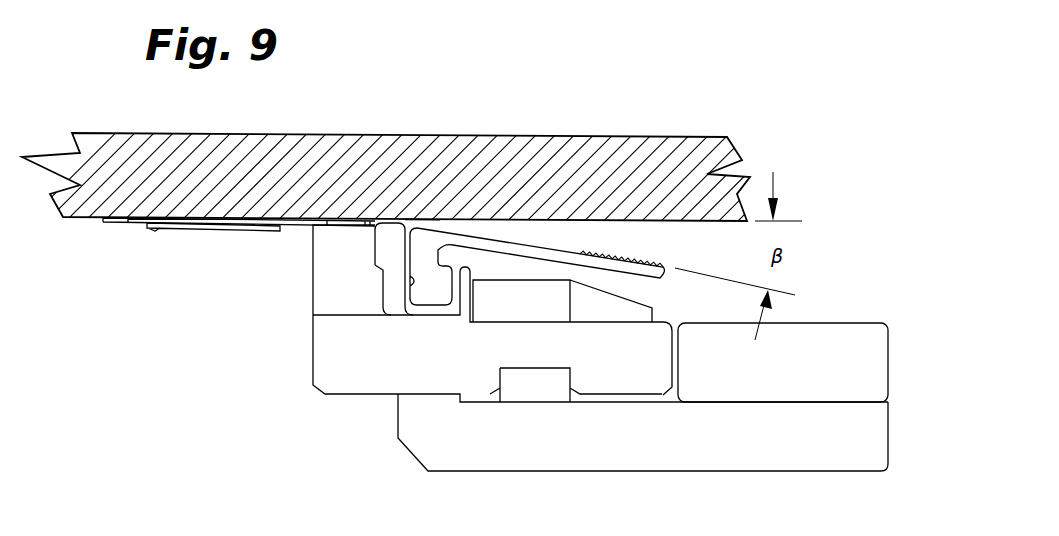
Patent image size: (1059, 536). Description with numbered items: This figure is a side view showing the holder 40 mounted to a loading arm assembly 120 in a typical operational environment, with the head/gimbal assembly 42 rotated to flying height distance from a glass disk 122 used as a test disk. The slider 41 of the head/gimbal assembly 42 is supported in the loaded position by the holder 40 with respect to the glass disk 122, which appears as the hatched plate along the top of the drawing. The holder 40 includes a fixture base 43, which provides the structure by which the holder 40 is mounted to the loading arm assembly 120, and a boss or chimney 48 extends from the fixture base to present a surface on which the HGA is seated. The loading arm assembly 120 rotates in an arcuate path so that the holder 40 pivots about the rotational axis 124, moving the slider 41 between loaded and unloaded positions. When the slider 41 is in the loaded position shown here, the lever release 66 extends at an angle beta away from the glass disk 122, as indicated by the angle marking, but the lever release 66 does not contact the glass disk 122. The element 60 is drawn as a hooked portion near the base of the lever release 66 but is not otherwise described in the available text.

The glass disk 122 is at (507, 137).
The rotational axis 124 is at (419, 237).
The slider 41 is at (103, 220).
The head/gimbal assembly 42 is at (182, 229).
The holder 40 is at (307, 395).
The boss 48 is at (318, 242).
The U-shaped hook 60 is at (417, 283).
The lever release 66 is at (553, 240).
The fixture base 43 is at (659, 332).
The loading arm assembly 120 is at (600, 471).